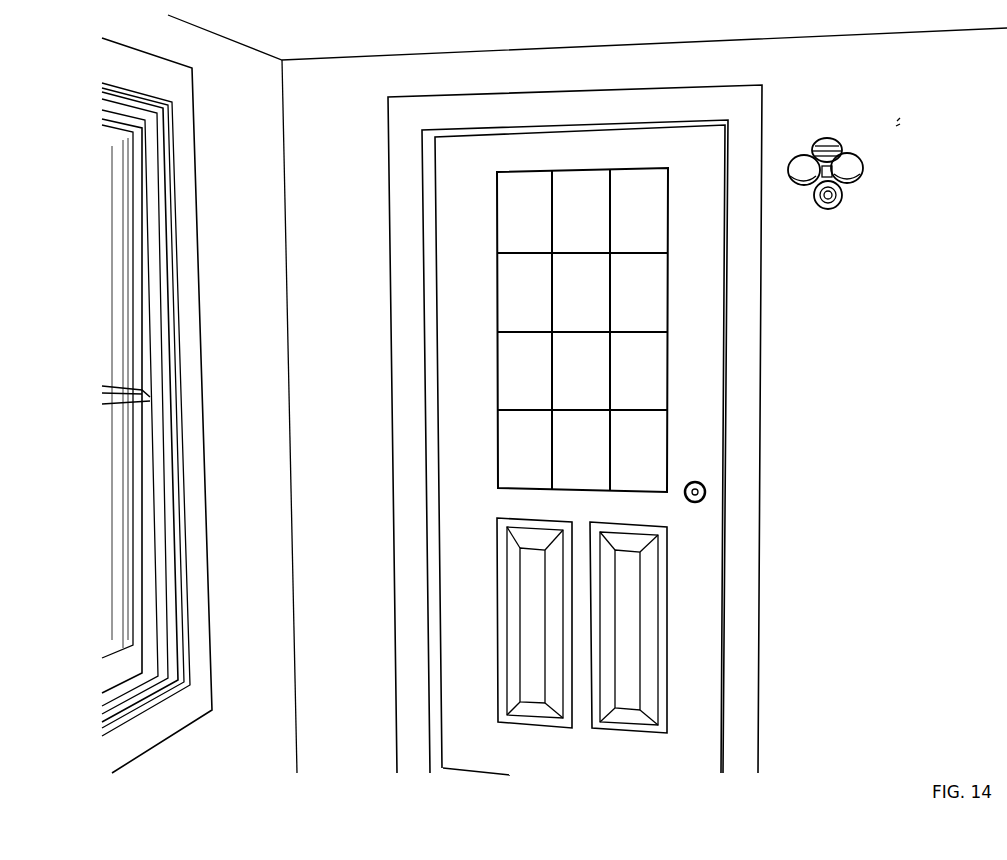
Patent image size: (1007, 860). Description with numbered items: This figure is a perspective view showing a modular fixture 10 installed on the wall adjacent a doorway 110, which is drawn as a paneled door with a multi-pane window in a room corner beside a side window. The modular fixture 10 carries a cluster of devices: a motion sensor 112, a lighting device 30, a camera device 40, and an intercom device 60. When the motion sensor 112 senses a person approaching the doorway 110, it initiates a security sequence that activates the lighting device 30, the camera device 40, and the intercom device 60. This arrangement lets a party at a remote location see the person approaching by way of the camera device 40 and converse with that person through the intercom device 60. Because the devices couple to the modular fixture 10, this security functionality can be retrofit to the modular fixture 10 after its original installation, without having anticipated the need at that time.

The modular fixture 10 is at (878, 142).
The lighting device 30 is at (800, 157).
The camera device 40 is at (834, 207).
The intercom device 60 is at (816, 143).
The doorway 110 is at (757, 465).
The motion sensor 112 is at (863, 171).